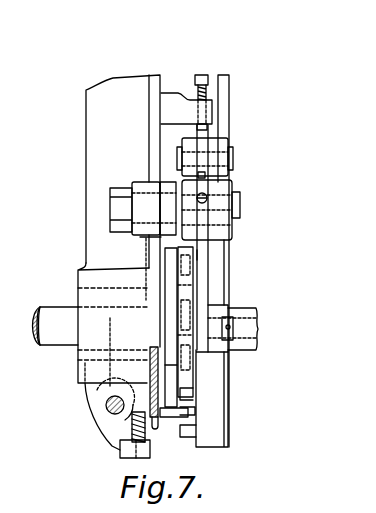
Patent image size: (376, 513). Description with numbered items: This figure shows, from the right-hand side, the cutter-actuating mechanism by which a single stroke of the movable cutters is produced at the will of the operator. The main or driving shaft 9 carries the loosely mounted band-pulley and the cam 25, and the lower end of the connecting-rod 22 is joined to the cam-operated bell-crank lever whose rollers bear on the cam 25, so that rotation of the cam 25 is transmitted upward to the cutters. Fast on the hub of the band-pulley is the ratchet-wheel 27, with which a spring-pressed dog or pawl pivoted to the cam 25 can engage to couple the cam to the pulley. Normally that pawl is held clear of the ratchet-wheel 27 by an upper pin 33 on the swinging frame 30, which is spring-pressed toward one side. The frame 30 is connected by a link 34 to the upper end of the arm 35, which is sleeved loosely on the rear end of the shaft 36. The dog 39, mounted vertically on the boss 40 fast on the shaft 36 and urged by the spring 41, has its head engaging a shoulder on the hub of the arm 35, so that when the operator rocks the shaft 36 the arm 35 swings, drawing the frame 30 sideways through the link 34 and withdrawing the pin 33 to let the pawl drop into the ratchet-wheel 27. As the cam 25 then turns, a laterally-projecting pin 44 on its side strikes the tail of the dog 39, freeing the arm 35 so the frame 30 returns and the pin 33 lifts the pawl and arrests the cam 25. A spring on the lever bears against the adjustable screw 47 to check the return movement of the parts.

The main or driving shaft 9 is at (262, 332).
The rod 22 is at (231, 107).
The cam 25 is at (228, 433).
The ratchet-wheel 27 is at (187, 322).
The frame 30 is at (171, 258).
The pin 33 is at (183, 400).
The link 34 is at (143, 335).
The arm 35 is at (100, 328).
The shaft 36 is at (107, 415).
The dog 39 is at (170, 418).
The boss 40 is at (108, 450).
The spring 41 is at (126, 442).
The pin 44 is at (184, 437).
The screw 47 is at (202, 75).